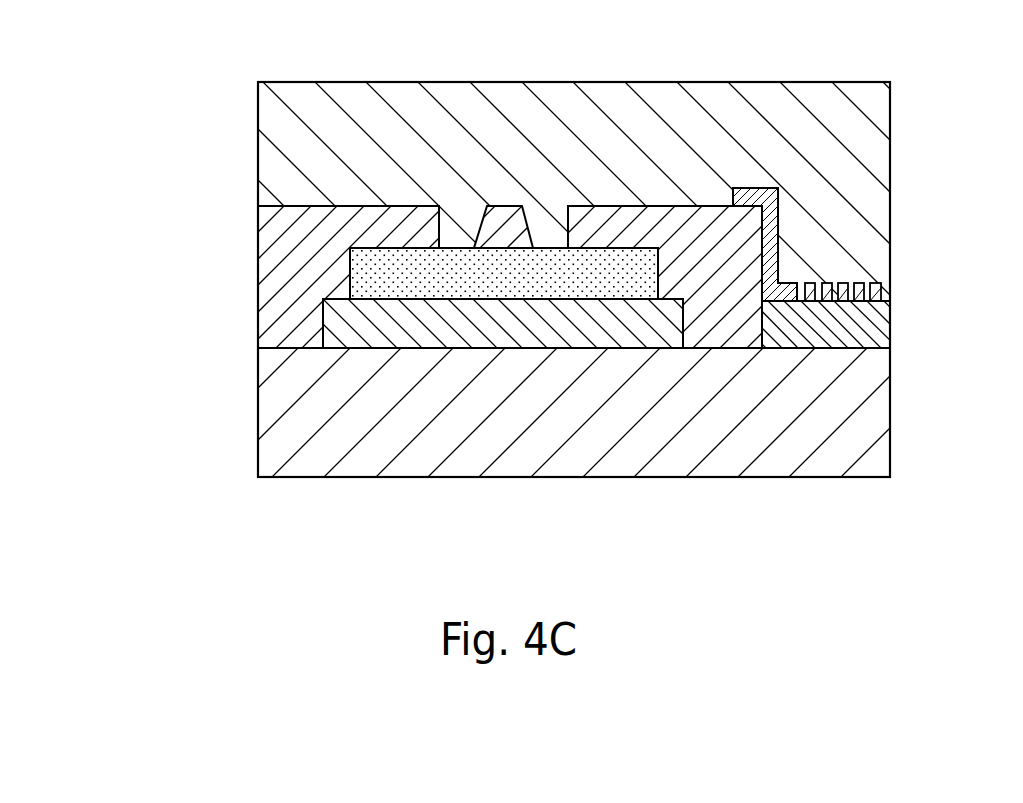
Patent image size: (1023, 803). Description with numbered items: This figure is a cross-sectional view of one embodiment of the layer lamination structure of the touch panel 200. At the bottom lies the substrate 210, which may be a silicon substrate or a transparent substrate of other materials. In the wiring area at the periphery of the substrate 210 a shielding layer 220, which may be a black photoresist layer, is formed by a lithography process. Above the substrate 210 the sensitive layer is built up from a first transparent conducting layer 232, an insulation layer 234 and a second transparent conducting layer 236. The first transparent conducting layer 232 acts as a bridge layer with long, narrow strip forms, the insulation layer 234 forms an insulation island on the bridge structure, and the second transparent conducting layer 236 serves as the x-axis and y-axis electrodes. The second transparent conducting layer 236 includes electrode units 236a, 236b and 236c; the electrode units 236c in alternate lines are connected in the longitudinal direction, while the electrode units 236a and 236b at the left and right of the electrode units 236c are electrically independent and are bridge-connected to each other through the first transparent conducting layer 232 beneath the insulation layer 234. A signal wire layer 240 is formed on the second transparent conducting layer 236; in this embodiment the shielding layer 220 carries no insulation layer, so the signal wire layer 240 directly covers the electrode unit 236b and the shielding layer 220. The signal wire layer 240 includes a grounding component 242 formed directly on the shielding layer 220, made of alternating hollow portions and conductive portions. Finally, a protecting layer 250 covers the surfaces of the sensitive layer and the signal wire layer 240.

The touch panel 200 is at (176, 68).
The substrate 210 is at (878, 412).
The shielding layer 220 is at (877, 325).
The first transparent conducting layer 232 is at (486, 327).
The insulation layer 234 is at (593, 263).
The second transparent conducting layer 236 is at (555, 182).
The electrode unit 236a is at (368, 223).
The electrode unit 236b is at (702, 227).
The electrode unit 236c is at (500, 220).
The signal wire layer 240 is at (767, 210).
The grounding component 242 is at (883, 294).
The protecting layer 250 is at (833, 115).